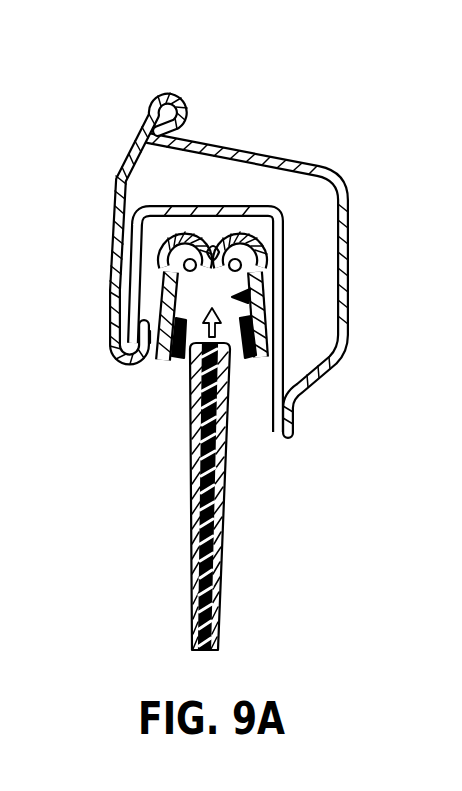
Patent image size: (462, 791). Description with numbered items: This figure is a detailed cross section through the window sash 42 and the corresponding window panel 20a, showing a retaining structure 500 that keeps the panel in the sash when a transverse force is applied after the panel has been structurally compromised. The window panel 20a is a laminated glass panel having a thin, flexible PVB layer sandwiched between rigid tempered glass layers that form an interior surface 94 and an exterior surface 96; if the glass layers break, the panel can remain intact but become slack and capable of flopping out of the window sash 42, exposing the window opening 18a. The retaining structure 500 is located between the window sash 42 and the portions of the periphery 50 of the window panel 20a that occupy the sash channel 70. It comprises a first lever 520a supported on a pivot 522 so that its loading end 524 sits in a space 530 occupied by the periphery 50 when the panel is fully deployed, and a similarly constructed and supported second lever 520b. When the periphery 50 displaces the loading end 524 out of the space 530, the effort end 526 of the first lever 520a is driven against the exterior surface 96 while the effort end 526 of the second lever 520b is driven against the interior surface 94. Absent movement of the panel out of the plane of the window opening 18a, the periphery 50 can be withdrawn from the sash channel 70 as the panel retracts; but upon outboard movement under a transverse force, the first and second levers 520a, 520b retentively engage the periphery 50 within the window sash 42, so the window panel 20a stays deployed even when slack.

The window sash 42 is at (157, 97).
The sash channel 70 is at (160, 220).
The retaining structure 500 is at (214, 224).
The loading end 524 is at (300, 178).
The pivot 522 is at (183, 263).
The first lever 520a is at (130, 300).
The second lever 520b is at (268, 330).
The effort end 526 is at (176, 352).
The space 530 is at (248, 296).
The periphery 50 is at (226, 445).
The window opening 18a is at (208, 573).
The interior surface 94 is at (222, 598).
The window panel 20a is at (192, 640).
The exterior surface 96 is at (188, 598).